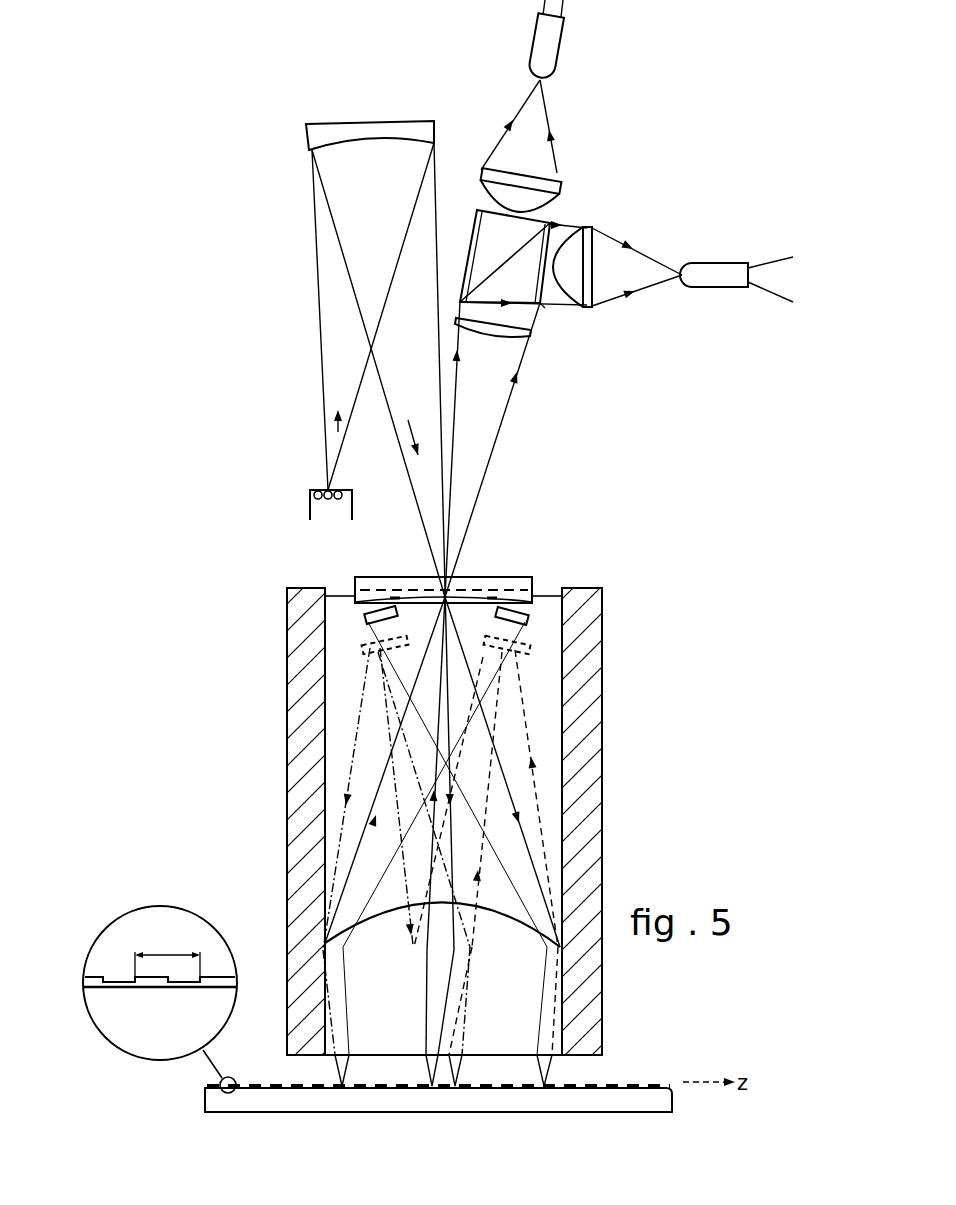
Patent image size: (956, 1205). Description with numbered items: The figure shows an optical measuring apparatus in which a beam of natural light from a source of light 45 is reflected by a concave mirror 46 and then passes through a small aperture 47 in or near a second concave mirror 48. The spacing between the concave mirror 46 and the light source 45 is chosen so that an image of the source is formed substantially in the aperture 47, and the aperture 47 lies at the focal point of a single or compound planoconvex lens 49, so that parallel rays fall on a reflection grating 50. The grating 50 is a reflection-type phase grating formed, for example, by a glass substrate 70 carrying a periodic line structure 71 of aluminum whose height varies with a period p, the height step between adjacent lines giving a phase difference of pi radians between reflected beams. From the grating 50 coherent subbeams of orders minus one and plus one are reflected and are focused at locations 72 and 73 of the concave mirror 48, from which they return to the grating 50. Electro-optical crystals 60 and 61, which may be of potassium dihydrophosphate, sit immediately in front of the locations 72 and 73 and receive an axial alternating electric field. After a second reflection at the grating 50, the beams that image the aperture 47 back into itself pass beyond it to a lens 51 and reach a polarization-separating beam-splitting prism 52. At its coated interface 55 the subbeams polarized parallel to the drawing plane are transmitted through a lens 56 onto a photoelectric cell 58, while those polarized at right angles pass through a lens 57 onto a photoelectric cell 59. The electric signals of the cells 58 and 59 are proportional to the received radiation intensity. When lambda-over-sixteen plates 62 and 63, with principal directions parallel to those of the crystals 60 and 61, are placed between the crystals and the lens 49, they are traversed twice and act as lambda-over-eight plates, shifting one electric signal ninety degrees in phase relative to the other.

The source of light 45 is at (310, 497).
The concave mirror 46 is at (372, 132).
The aperture 47 is at (450, 592).
The concave mirror 48 is at (533, 580).
The planoconvex lens 49 is at (525, 1015).
The reflection grating 50 is at (627, 1108).
The lens 51 is at (513, 330).
The polarization-separating beam-splitting prism 52 is at (543, 307).
The interface 55 is at (527, 250).
The lens 56 is at (558, 172).
The lens 57 is at (587, 287).
The photoelectric cell 58 is at (547, 50).
The photoelectric cell 59 is at (722, 277).
The electro-optical crystal 60 is at (365, 617).
The electro-optical crystal 61 is at (528, 622).
The lambda/16 plate 62 is at (365, 648).
The lambda/16 plate 63 is at (528, 672).
The glass substrate 70 is at (123, 1027).
The periodic line structure 71 is at (86, 977).
The location 72 is at (375, 601).
The location 73 is at (510, 600).